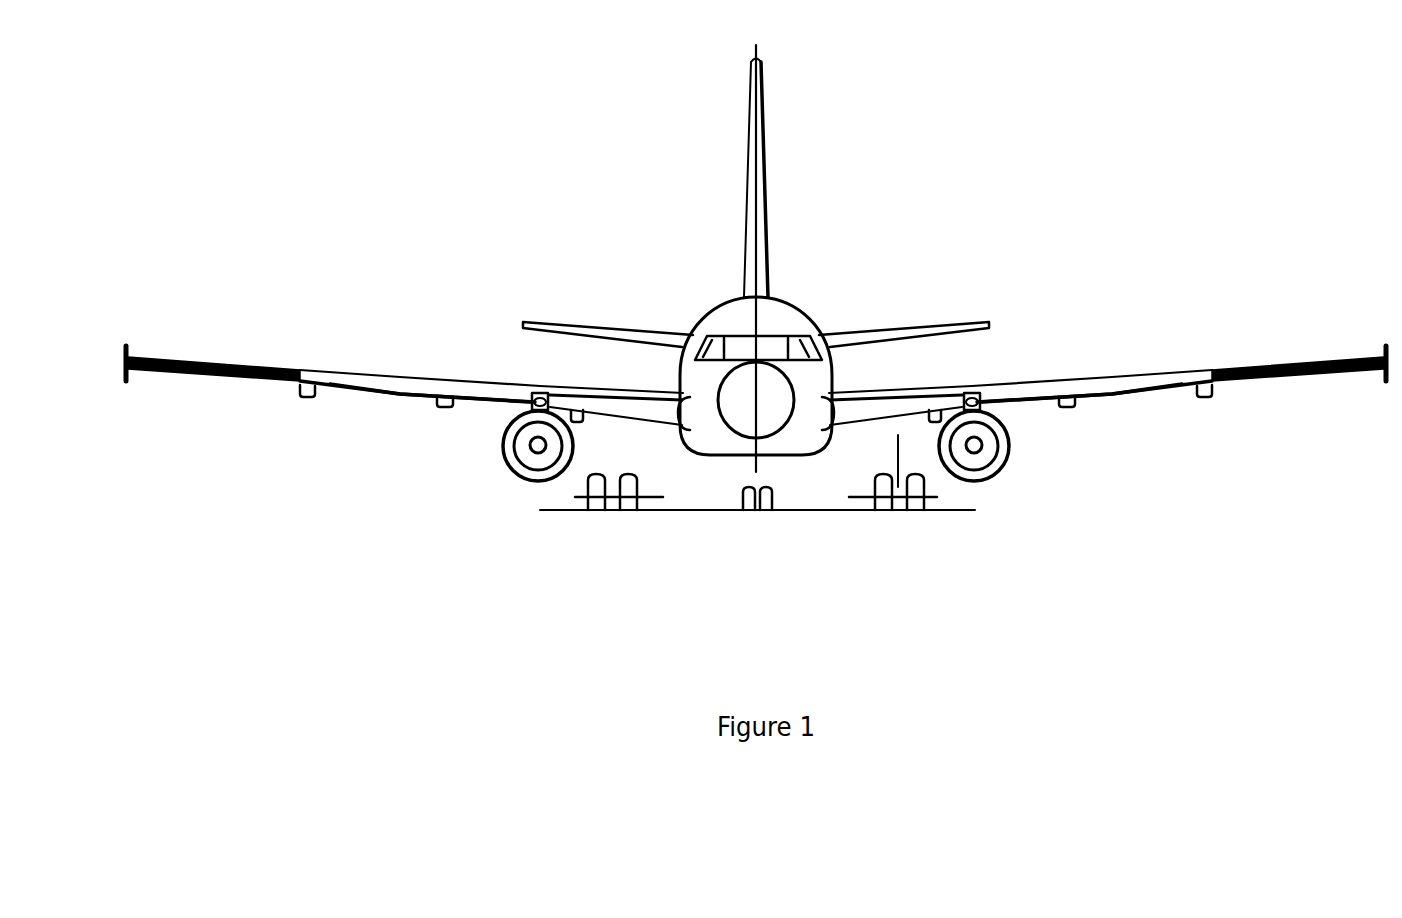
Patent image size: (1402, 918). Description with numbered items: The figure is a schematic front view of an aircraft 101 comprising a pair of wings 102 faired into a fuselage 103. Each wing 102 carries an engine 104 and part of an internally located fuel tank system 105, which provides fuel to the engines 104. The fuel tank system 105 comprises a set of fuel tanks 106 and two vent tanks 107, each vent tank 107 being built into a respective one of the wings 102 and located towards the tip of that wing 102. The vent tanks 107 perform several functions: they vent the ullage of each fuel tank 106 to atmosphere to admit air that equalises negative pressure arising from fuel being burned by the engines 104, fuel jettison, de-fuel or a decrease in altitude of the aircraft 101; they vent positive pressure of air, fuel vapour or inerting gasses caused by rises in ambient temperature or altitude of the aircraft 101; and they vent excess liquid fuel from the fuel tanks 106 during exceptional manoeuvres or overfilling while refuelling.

The aircraft 101 is at (575, 197).
The wing 102 is at (300, 395).
The fuselage 103 is at (800, 318).
The engine 104 is at (534, 468).
The fuel tank system 105 is at (333, 374).
The fuel tank 106 is at (387, 373).
The vent tank 107 is at (160, 360).